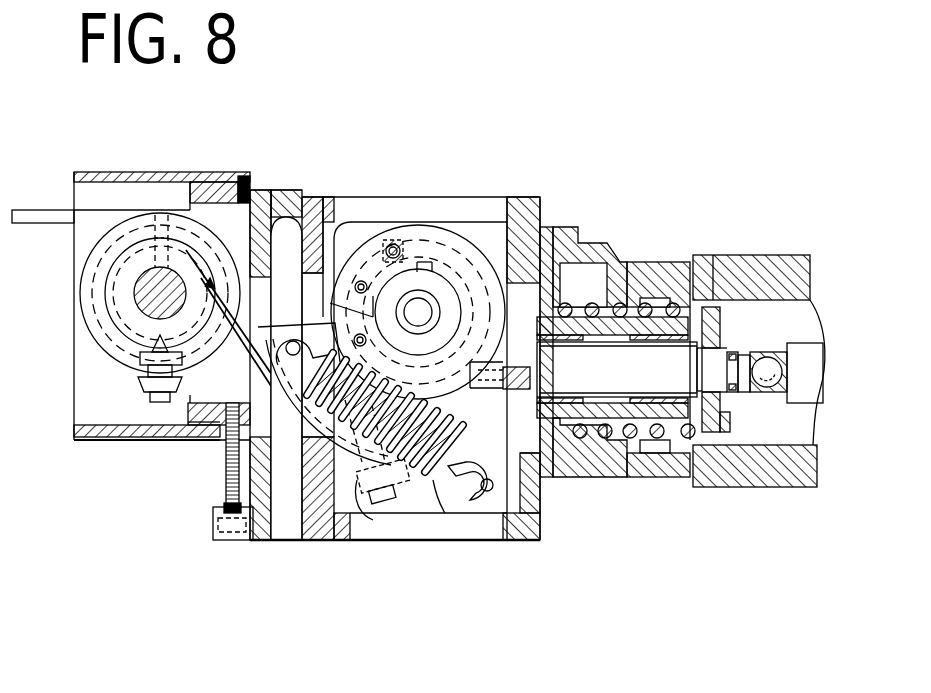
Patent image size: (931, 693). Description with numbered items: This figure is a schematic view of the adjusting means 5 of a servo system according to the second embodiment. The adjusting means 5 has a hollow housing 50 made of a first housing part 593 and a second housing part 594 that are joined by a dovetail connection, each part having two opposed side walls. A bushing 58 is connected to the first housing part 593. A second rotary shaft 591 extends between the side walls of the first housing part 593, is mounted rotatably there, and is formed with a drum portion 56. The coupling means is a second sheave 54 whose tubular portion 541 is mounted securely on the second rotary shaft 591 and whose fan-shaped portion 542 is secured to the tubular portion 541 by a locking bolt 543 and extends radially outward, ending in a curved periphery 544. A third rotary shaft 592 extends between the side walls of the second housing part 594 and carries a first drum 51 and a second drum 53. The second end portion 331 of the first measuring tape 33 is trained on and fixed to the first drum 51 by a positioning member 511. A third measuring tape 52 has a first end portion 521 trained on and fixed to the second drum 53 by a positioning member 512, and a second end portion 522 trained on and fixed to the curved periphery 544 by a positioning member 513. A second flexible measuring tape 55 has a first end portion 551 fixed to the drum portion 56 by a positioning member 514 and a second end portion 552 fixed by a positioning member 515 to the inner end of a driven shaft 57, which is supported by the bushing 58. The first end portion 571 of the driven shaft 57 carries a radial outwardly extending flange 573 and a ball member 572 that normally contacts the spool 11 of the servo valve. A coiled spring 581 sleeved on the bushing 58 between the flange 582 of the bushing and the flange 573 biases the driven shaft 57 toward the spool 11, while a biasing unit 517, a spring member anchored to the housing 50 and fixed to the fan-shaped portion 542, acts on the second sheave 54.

The adjusting means 5 is at (262, 163).
The spool 11 is at (826, 345).
The first measuring tape 33 is at (28, 208).
The second end portion 331 is at (195, 432).
The hollow housing 50 is at (525, 190).
The first drum 51 is at (100, 268).
The positioning member 511 is at (187, 403).
The positioning member 512 is at (148, 358).
The positioning member 513 is at (378, 512).
The positioning member 514 is at (358, 232).
The positioning member 515 is at (549, 520).
The biasing unit 517 is at (435, 500).
The third measuring tape 52 is at (327, 425).
The first end portion 521 is at (118, 344).
The second end portion 522 is at (353, 492).
The second drum 53 is at (128, 300).
The second sheave 54 is at (260, 541).
The tubular portion 541 is at (540, 200).
The fan-shaped portion 542 is at (330, 541).
The locking bolt 543 is at (340, 320).
The curved periphery 544 is at (245, 188).
The second flexible measuring tape 55 is at (446, 236).
The first end portion 551 is at (412, 235).
The second end portion 552 is at (480, 525).
The drum portion 56 is at (492, 225).
The driven shaft 57 is at (700, 450).
The first end portion 571 is at (722, 356).
The ball member 572 is at (772, 390).
The radial outwardly extending flange 573 is at (712, 365).
The bushing 58 is at (593, 435).
The coiled spring 581 is at (659, 435).
The flange 582 is at (572, 290).
The second rotary shaft 591 is at (417, 310).
The third rotary shaft 592 is at (150, 283).
The first housing part 593 is at (305, 535).
The second housing part 594 is at (138, 432).